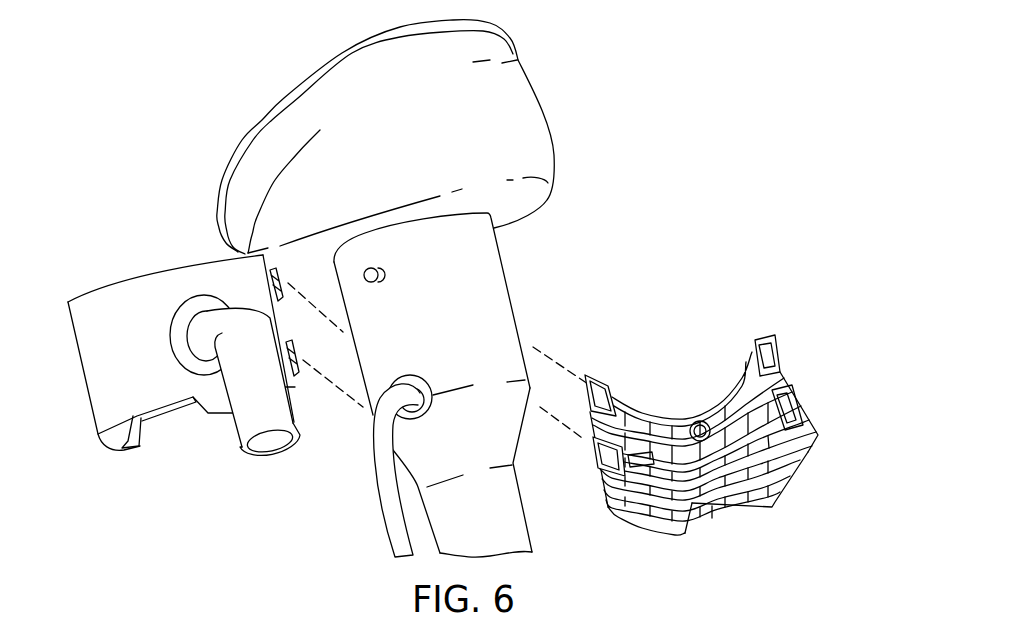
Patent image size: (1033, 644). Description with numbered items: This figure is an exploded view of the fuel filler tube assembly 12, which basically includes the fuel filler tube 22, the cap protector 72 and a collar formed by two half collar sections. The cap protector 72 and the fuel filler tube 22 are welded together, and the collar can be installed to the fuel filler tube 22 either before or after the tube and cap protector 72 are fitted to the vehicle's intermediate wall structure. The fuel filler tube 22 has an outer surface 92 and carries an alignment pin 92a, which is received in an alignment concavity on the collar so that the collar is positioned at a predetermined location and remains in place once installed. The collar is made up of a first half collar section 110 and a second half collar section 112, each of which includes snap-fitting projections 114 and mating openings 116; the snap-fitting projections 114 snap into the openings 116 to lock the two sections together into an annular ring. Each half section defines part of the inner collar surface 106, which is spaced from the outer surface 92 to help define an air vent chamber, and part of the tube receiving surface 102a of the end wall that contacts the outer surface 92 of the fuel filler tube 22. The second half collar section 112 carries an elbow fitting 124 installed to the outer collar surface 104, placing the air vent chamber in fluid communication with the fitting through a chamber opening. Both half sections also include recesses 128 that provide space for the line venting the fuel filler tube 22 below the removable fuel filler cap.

The fuel filler tube assembly 12 is at (702, 118).
The fuel filler tube 22 is at (498, 521).
The cap protector 72 is at (522, 128).
The outer surface 92 is at (490, 324).
The alignment pin 92a is at (371, 282).
The tube receiving surface 102a is at (782, 494).
The outer collar surface 104 is at (120, 369).
The inner collar surface 106 is at (642, 458).
The first half collar section 110 is at (711, 398).
The second half collar section 112 is at (140, 274).
The snap-fitting projections 114 is at (290, 295).
The mating openings 116 is at (777, 340).
The elbow fitting 124 is at (247, 414).
The recesses 128 is at (155, 412).